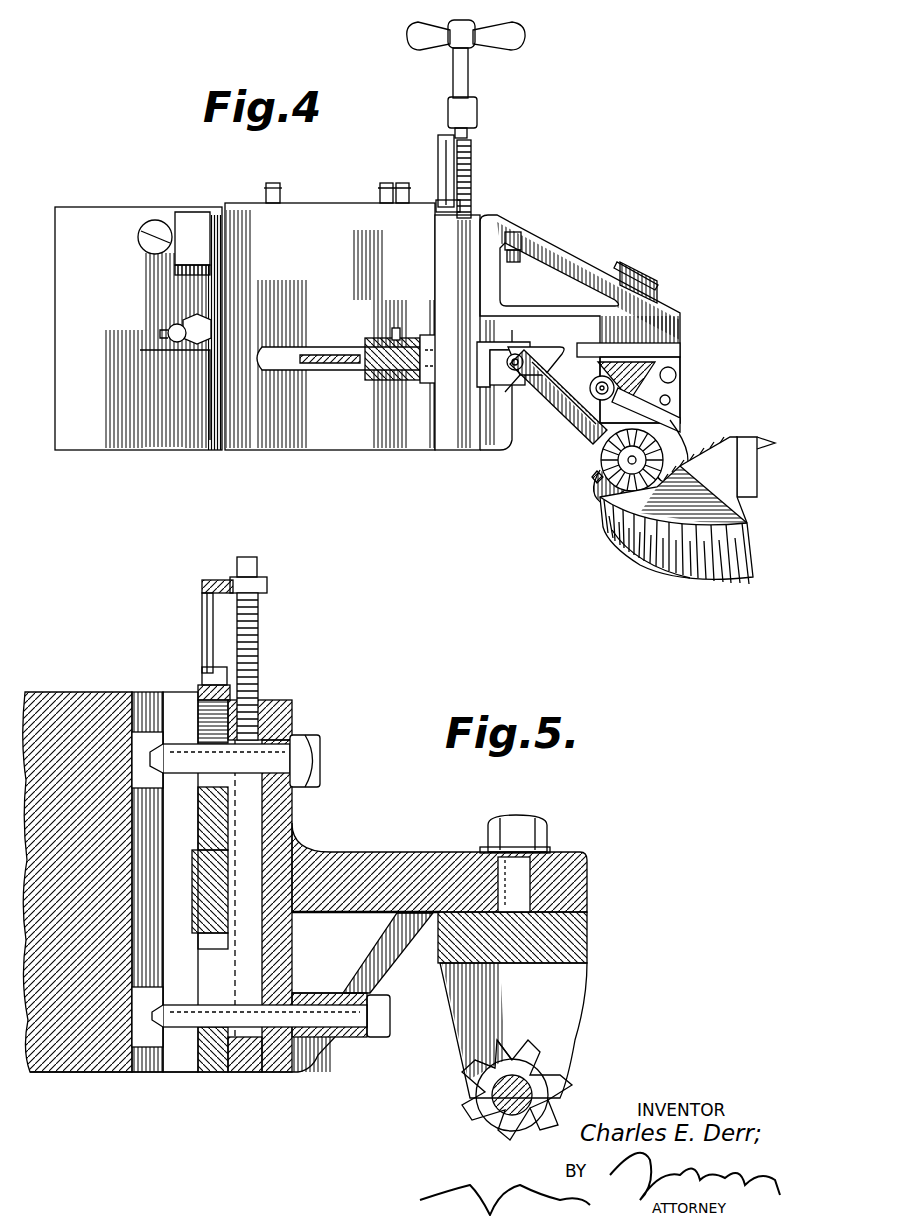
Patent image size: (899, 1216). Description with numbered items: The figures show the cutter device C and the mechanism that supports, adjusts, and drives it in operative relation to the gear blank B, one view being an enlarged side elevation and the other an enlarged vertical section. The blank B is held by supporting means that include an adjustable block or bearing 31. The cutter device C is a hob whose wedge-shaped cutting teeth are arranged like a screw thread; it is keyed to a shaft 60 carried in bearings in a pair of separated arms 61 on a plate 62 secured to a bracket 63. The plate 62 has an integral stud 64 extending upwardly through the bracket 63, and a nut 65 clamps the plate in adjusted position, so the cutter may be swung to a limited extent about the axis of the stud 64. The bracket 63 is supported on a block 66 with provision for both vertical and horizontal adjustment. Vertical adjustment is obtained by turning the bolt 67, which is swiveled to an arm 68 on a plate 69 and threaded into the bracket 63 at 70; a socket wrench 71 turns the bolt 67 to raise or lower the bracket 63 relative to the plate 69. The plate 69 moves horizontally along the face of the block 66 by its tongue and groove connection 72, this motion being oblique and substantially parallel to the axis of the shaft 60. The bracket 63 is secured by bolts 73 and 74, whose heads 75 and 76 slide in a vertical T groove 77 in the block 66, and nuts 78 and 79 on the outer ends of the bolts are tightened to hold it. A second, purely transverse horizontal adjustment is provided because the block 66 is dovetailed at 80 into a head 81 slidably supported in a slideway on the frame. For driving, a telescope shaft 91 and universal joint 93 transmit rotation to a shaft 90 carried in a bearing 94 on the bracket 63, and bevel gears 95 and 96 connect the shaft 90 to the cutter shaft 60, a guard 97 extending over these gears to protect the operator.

In FIG. 4, the block or bearing 31 is at (765, 440).
In FIG. 4, the shaft 60 is at (612, 520).
In FIG. 5, the shaft 60 is at (535, 1098).
In FIG. 4, the separated arms 61 is at (640, 350).
In FIG. 5, the separated arms 61 is at (565, 1003).
In FIG. 5, the plate 62 is at (580, 935).
In FIG. 4, the bracket 63 is at (572, 316).
In FIG. 5, the bracket 63 is at (402, 852).
In FIG. 4, the stud 64 is at (630, 268).
In FIG. 5, the stud 64 is at (552, 848).
In FIG. 4, the nut 65 is at (648, 270).
In FIG. 5, the nut 65 is at (518, 820).
In FIG. 4, the block 66 is at (310, 203).
In FIG. 5, the block 66 is at (65, 692).
In FIG. 4, the bolt 67 is at (474, 184).
In FIG. 5, the bolt 67 is at (262, 640).
In FIG. 4, the arm 68 is at (438, 155).
In FIG. 5, the arm 68 is at (202, 610).
In FIG. 5, the plate 69 is at (205, 687).
In FIG. 5, the threaded portion 70 is at (270, 700).
In FIG. 4, the socket wrench 71 is at (478, 110).
In FIG. 5, the tongue and groove connection 72 is at (185, 870).
In FIG. 4, the bolt 73 is at (520, 262).
In FIG. 5, the bolt 73 is at (298, 745).
In FIG. 5, the bolt 74 is at (218, 1045).
In FIG. 5, the head 75 is at (145, 742).
In FIG. 5, the head 76 is at (150, 1045).
In FIG. 5, the T groove 77 is at (120, 985).
In FIG. 4, the nut 78 is at (512, 232).
In FIG. 5, the nut 78 is at (322, 760).
In FIG. 5, the nut 79 is at (390, 1017).
In FIG. 4, the dovetail 80 is at (195, 290).
In FIG. 4, the head 81 is at (108, 208).
In FIG. 4, the shaft 90 is at (538, 425).
In FIG. 4, the telescope shaft 91 is at (292, 345).
In FIG. 4, the universal joint 93 is at (525, 350).
In FIG. 4, the bearing 94 is at (575, 440).
In FIG. 4, the bevel gear 95 is at (630, 395).
In FIG. 4, the bevel gear 96 is at (662, 458).
In FIG. 4, the guard 97 is at (690, 412).
In FIG. 4, the gear blank B is at (655, 548).
In FIG. 4, the cutter device C is at (596, 484).
In FIG. 5, the cutter device C is at (468, 1112).